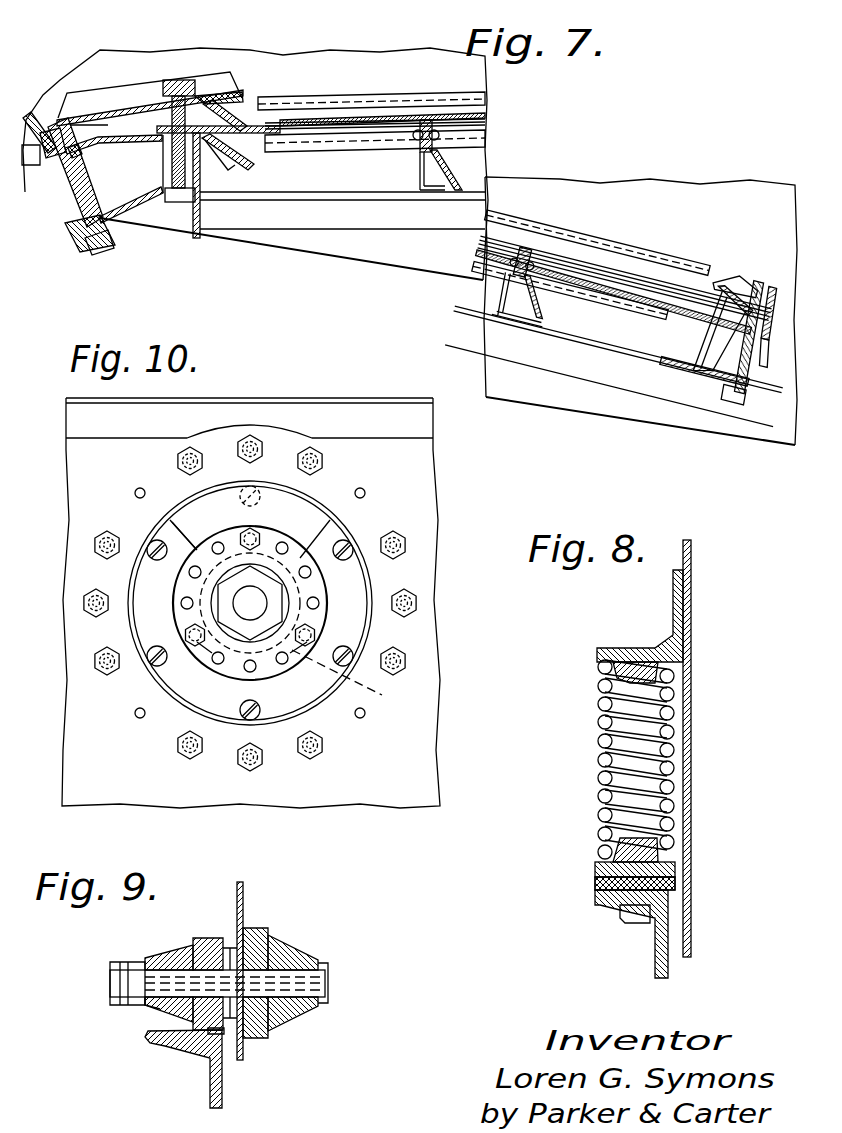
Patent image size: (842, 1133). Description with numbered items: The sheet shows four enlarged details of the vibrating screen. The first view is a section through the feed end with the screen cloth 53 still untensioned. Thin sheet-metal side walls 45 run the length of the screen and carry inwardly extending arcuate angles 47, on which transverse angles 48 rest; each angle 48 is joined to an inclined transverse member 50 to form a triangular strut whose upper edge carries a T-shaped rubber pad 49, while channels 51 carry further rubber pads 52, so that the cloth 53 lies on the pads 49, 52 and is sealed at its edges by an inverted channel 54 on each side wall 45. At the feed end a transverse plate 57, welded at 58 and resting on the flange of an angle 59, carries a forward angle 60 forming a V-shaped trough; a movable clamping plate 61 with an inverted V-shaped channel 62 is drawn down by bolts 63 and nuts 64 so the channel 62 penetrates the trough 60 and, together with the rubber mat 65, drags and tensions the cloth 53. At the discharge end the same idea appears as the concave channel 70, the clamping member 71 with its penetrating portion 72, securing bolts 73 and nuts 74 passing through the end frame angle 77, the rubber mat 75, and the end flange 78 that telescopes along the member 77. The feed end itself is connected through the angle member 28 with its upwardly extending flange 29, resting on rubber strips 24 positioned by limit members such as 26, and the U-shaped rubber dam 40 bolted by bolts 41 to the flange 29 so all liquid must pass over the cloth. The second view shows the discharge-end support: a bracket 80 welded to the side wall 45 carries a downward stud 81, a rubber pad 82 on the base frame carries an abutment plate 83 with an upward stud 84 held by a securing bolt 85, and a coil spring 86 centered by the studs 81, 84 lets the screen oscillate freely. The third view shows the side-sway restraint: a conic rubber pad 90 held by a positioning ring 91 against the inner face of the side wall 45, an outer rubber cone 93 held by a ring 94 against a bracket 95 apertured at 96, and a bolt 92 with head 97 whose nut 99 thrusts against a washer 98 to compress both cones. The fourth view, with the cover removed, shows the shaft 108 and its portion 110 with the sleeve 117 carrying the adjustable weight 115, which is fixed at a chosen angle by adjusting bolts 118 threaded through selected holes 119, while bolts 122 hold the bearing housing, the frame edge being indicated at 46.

In FIG. 7, the rubber strips 24 is at (96, 253).
In FIG. 8, the limit member 26 is at (655, 955).
In FIG. 9, the limit member 26 is at (210, 1087).
In FIG. 7, the angle member 28 is at (70, 230).
In FIG. 7, the upwardly extending flange 29 is at (72, 193).
In FIG. 7, the U-shaped rubber member or dam 40 is at (27, 118).
In FIG. 7, the bolts 41 is at (30, 165).
In FIG. 7, the side walls 45 is at (284, 55).
In FIG. 10, the side walls 45 is at (430, 458).
In FIG. 8, the side walls 45 is at (693, 708).
In FIG. 9, the side walls 45 is at (245, 888).
In FIG. 10, the frame edge 46 is at (364, 400).
In FIG. 7, the inwardly extending angles 47 is at (414, 225).
In FIG. 7, the transverse angles 48 is at (420, 167).
In FIG. 7, the rubber pads 49 is at (427, 120).
In FIG. 7, the inclined transverse member 50 is at (450, 166).
In FIG. 7, the channels 51 is at (330, 145).
In FIG. 7, the rubber pads 52 is at (363, 128).
In FIG. 7, the screen cloth or mesh 53 is at (304, 118).
In FIG. 7, the inverted channel 54 is at (347, 96).
In FIG. 7, the transverse plate 57 is at (132, 145).
In FIG. 7, the weld 58 is at (74, 152).
In FIG. 7, the angle 59 is at (178, 158).
In FIG. 7, the angle 60 is at (250, 152).
In FIG. 7, the movable plate or clamping member 61 is at (120, 108).
In FIG. 7, the inverted V-shaped member or channel 62 is at (225, 108).
In FIG. 7, the bolts 63 is at (180, 80).
In FIG. 7, the nuts 64 is at (165, 88).
In FIG. 7, the rubber mat 65 is at (202, 140).
In FIG. 7, the V-shaped upwardly concave channel 70 is at (725, 350).
In FIG. 7, the downwardly movable clamping member 71 is at (737, 283).
In FIG. 7, the V-shaped penetrating portion 72 is at (715, 287).
In FIG. 7, the securing bolts 73 is at (752, 398).
In FIG. 7, the nuts 74 is at (757, 290).
In FIG. 7, the rubber pad or mat 75 is at (688, 337).
In FIG. 7, the transverse angle member 77 is at (722, 390).
In FIG. 7, the outer or end flange 78 is at (774, 340).
In FIG. 8, the brackets or angles 80 is at (673, 604).
In FIG. 8, the centering members or studs 81 is at (605, 667).
In FIG. 8, the rubber pads 82 is at (600, 882).
In FIG. 8, the metal abutment plates 83 is at (600, 872).
In FIG. 8, the studs 84 is at (615, 845).
In FIG. 8, the locking or securing bolt 85 is at (620, 910).
In FIG. 8, the coil spring 86 is at (598, 743).
In FIG. 9, the conic rubber pads 90 is at (295, 958).
In FIG. 9, the positioning rings 91 is at (265, 940).
In FIG. 9, the bolts 92 is at (290, 985).
In FIG. 9, the outer rubber cones 93 is at (175, 952).
In FIG. 9, the rings 94 is at (200, 945).
In FIG. 9, the brackets 95 is at (223, 1035).
In FIG. 9, the aperture 96 is at (226, 968).
In FIG. 9, the head 97 is at (326, 1003).
In FIG. 9, the washer 98 is at (148, 1005).
In FIG. 9, the nut 99 is at (120, 966).
In FIG. 10, the shaft 108 is at (262, 600).
In FIG. 10, the shaft portion 110 is at (355, 681).
In FIG. 10, the adjustable weight 115 is at (330, 520).
In FIG. 10, the sleeve 117 is at (300, 560).
In FIG. 10, the adjusting bolts 118 is at (256, 530).
In FIG. 10, the holes 119 is at (189, 598).
In FIG. 10, the bolts 122 is at (306, 453).